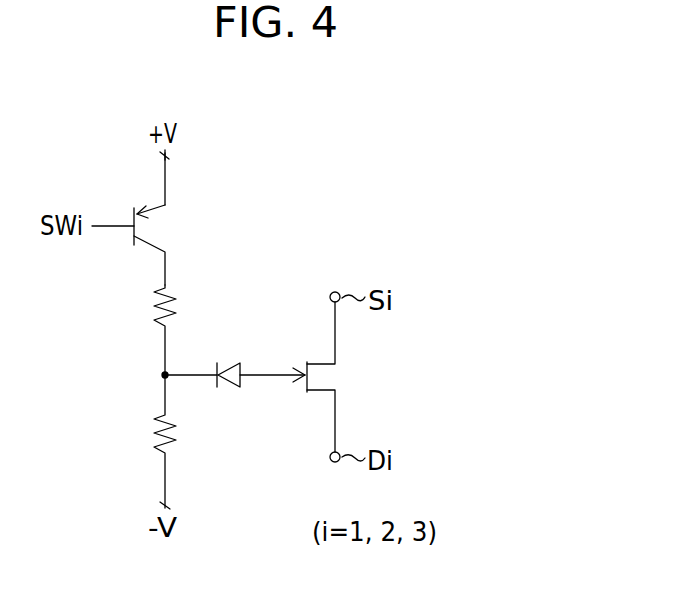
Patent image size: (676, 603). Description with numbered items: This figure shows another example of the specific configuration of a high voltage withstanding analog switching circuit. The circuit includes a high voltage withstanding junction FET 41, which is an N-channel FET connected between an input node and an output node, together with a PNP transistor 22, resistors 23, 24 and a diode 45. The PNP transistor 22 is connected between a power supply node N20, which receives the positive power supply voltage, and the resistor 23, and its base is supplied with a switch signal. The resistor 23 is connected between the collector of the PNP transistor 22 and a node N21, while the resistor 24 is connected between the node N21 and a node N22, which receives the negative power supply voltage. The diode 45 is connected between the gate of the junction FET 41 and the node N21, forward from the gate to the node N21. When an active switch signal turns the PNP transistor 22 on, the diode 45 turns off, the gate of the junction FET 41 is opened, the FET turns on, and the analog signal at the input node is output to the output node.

The PNP transistor 22 is at (156, 236).
The resistor 23 is at (177, 291).
The resistor 24 is at (177, 432).
The high voltage withstanding junction FET 41 is at (330, 390).
The diode 45 is at (228, 362).
The power supply node N20 is at (163, 157).
The node N21 is at (157, 375).
The node N22 is at (163, 505).